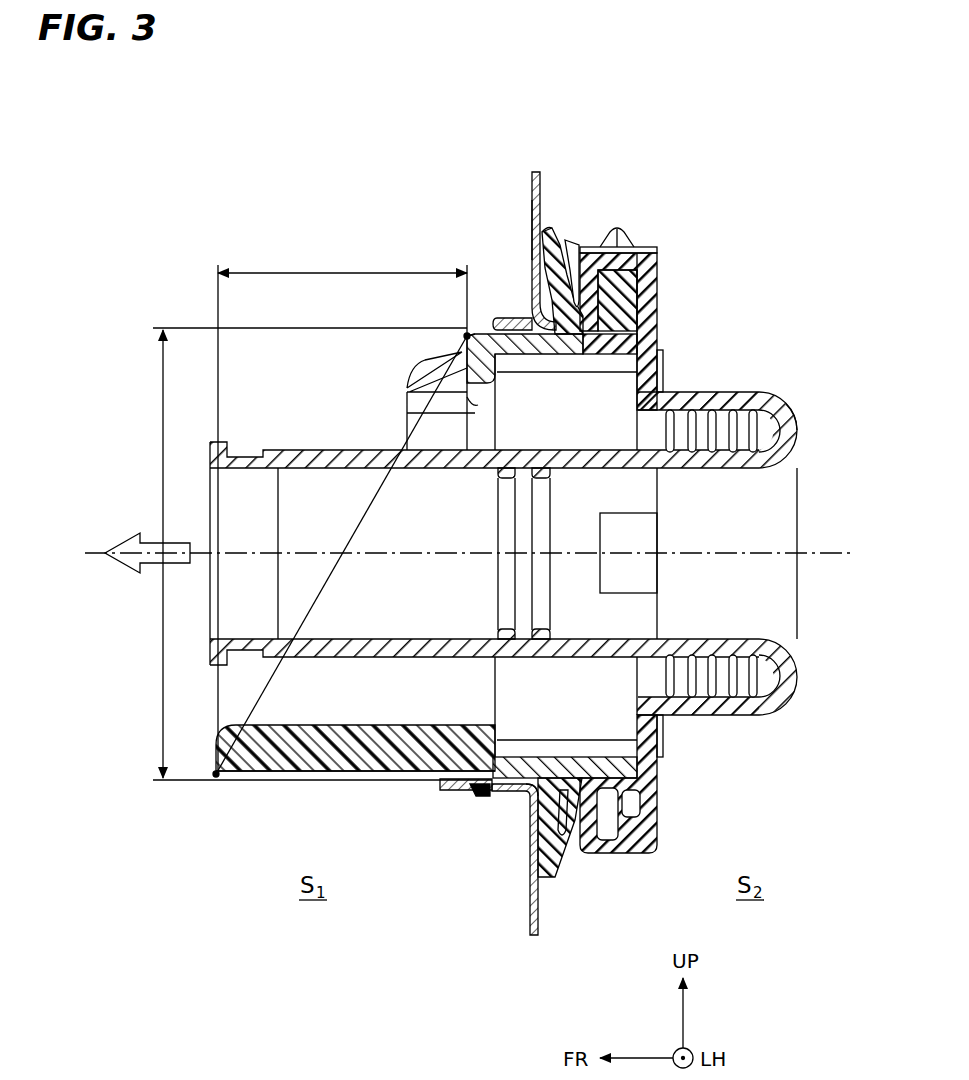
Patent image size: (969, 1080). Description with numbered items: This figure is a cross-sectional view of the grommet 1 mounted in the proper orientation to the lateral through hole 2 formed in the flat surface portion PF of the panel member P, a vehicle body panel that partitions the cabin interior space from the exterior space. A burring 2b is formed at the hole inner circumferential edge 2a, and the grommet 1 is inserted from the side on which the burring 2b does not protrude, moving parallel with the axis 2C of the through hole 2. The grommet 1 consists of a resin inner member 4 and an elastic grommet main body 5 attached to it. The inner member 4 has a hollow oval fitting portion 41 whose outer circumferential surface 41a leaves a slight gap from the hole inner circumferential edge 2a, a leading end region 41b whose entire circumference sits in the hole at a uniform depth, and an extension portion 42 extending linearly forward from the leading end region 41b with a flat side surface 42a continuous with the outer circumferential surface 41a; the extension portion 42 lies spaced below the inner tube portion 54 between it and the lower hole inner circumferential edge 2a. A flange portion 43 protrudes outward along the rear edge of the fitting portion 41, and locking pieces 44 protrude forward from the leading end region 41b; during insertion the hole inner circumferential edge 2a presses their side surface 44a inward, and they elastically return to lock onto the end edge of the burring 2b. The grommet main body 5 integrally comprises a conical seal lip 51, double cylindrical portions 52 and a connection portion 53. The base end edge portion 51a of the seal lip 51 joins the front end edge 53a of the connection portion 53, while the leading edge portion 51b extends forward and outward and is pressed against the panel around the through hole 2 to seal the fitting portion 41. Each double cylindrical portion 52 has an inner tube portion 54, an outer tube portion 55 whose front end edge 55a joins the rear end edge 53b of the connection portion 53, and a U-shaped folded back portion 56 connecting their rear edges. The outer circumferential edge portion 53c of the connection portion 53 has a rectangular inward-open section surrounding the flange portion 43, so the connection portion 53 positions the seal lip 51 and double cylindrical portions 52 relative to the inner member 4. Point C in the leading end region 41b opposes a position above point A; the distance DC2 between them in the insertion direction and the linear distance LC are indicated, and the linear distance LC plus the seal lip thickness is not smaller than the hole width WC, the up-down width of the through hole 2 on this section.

The grommet 1 is at (292, 160).
The through hole 2 is at (466, 298).
The hole inner circumferential edge 2a is at (565, 750).
The burring 2b is at (514, 803).
The axis of the through hole 2C is at (822, 550).
The inner member 4 is at (426, 308).
The fitting portion 41 is at (512, 355).
The outer circumferential surface 41a is at (533, 318).
The leading end region 41b is at (466, 350).
The extension portion 42 is at (292, 776).
The side surface 42a is at (347, 776).
The flange portion 43 is at (658, 296).
The locking piece 44 is at (407, 393).
The side surface 44a is at (486, 798).
The grommet main body 5 is at (770, 312).
The seal lip 51 is at (552, 262).
The base end edge portion 51a is at (577, 305).
The leading edge portion 51b is at (549, 228).
The double cylindrical portion 52 is at (798, 464).
The connection portion 53 is at (658, 328).
The front end edge 53a is at (585, 338).
The rear end edge 53b is at (664, 385).
The outer circumferential edge portion 53c is at (650, 248).
The inner tube portion 54 is at (700, 469).
The outer tube portion 55 is at (752, 392).
The front end edge 55a is at (642, 411).
The folded back portion 56 is at (794, 412).
The panel member P is at (530, 188).
The flat surface portion PF is at (532, 222).
The point A is at (217, 779).
The point C is at (466, 332).
The distance DC2 is at (342, 511).
The hole width WC is at (311, 554).
The linear distance LC is at (341, 555).